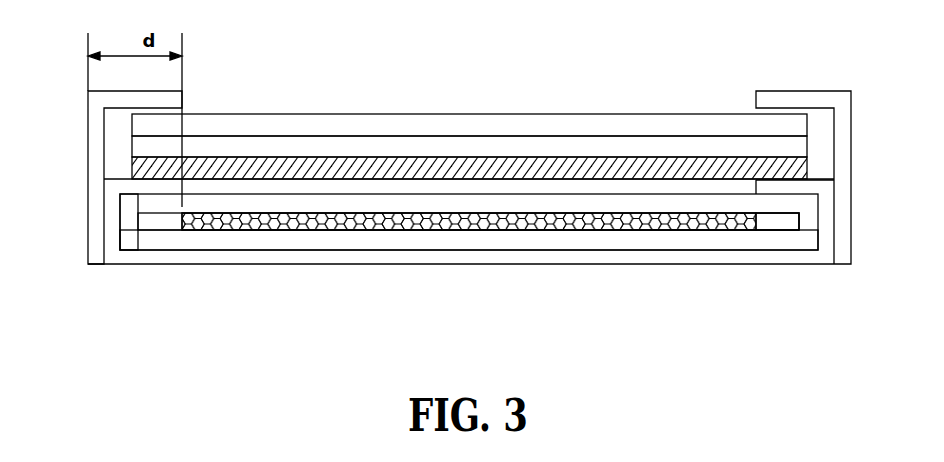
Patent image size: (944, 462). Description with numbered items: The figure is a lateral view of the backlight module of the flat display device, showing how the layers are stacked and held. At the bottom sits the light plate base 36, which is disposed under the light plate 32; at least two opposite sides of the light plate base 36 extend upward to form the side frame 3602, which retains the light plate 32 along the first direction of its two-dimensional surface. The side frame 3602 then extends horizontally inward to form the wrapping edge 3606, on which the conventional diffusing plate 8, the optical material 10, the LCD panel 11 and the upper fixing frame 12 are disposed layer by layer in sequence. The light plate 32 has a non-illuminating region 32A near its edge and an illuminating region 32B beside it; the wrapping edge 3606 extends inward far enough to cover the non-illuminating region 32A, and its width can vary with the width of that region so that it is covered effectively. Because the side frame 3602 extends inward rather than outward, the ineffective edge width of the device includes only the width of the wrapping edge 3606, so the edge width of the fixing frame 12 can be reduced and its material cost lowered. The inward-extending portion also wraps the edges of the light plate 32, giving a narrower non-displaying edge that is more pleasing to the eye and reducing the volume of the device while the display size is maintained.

The diffusing plate 8 is at (132, 172).
The optical material 10 is at (140, 147).
The LCD panel 11 is at (464, 125).
The upper fixing frame 12 is at (845, 161).
The light plate 32 is at (493, 289).
The non-illuminating region 32A is at (780, 267).
The illuminating region 32B is at (675, 227).
The light plate base 36 is at (441, 257).
The side frame 3602 is at (113, 232).
The wrapping edge 3606 is at (153, 188).